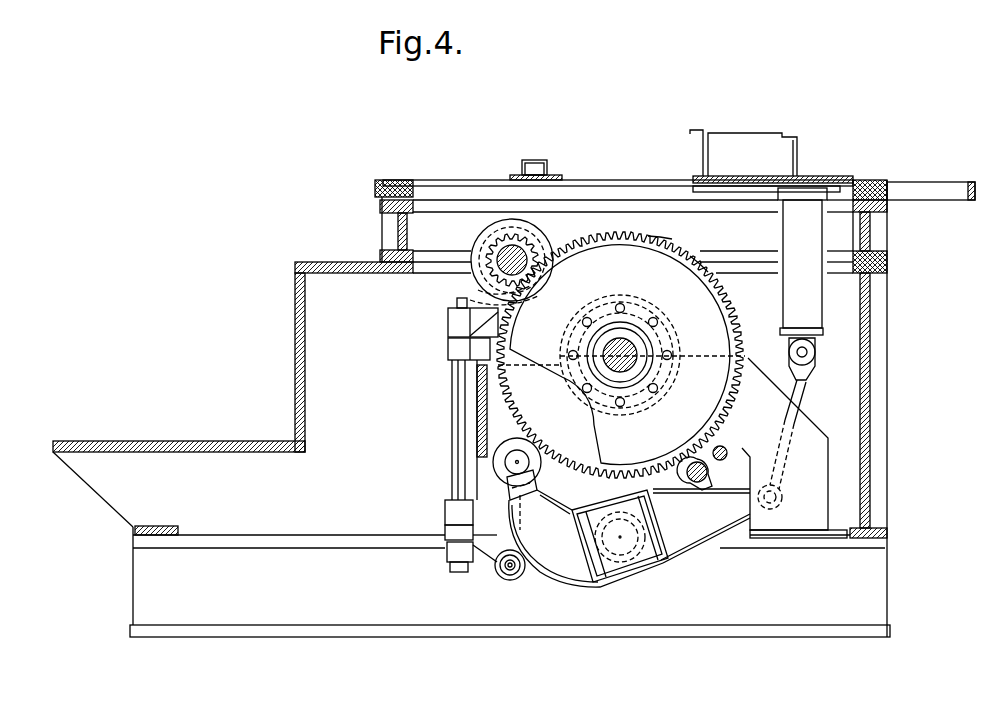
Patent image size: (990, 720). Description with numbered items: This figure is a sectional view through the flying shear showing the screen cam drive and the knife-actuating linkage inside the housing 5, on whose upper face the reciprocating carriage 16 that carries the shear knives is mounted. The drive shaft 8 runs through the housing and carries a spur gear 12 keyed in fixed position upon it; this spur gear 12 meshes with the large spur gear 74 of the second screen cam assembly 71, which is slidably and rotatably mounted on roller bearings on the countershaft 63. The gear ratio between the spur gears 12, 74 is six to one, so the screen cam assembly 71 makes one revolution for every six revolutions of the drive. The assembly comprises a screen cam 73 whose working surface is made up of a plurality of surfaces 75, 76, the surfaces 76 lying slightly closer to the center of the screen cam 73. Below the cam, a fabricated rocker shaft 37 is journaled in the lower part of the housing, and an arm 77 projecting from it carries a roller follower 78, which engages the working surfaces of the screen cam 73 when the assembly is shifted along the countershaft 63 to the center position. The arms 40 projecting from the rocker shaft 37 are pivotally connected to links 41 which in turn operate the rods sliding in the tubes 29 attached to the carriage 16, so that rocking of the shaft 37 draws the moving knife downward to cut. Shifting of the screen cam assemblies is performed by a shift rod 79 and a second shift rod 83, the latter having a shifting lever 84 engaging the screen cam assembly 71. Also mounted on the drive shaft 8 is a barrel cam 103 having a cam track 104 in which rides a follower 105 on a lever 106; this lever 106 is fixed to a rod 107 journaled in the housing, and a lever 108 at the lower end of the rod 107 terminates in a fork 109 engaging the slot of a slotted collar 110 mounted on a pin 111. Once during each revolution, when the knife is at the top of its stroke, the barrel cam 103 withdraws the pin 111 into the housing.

The housing 5 is at (884, 345).
The drive shaft 8 is at (503, 262).
The spur gear 12 is at (497, 243).
The reciprocating carriage 16 is at (759, 128).
The tubes 29 is at (805, 234).
The rocker shaft 37 is at (635, 572).
The arms 40 is at (724, 523).
The links 41 is at (792, 398).
The countershaft 63 is at (628, 358).
The second screen cam assembly 71 is at (640, 312).
The screen cam 73 is at (637, 275).
The spur gear 74 is at (738, 330).
The cam surfaces 75 is at (697, 272).
The cam surfaces 76 is at (660, 243).
The arm 77 is at (560, 577).
The roller follower 78 is at (528, 447).
The shift rod 79 is at (728, 447).
The second shift rod 83 is at (698, 484).
The shifting lever 84 is at (672, 400).
The barrel cam 103 is at (534, 234).
The cam track 104 is at (478, 286).
The follower 105 is at (470, 298).
The lever 106 is at (481, 313).
The rod 107 is at (457, 405).
The lever 108 is at (471, 572).
The fork 109 is at (517, 581).
The slotted collar 110 is at (527, 578).
The pin 111 is at (505, 572).